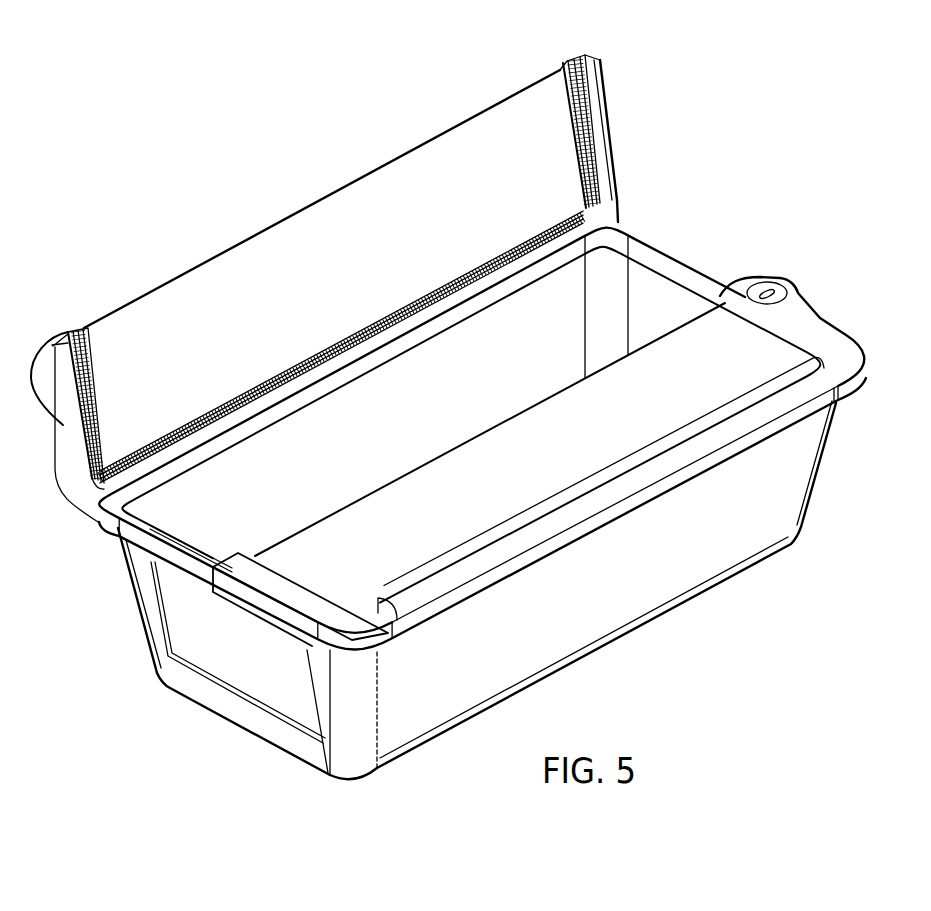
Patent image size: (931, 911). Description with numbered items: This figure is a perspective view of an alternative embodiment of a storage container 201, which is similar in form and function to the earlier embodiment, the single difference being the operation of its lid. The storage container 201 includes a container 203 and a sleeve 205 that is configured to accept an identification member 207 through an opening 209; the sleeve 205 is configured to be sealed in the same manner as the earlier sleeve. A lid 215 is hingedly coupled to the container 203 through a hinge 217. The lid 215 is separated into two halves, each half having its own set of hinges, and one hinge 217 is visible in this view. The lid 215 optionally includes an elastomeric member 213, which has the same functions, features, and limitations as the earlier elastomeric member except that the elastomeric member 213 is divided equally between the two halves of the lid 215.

The storage container 201 is at (138, 256).
The container 203 is at (637, 631).
The sleeve 205 is at (207, 546).
The identification member 207 is at (193, 648).
The opening 209 is at (176, 513).
The elastomeric member 213 is at (571, 58).
The lid 215 is at (372, 171).
The hinge 217 is at (662, 479).